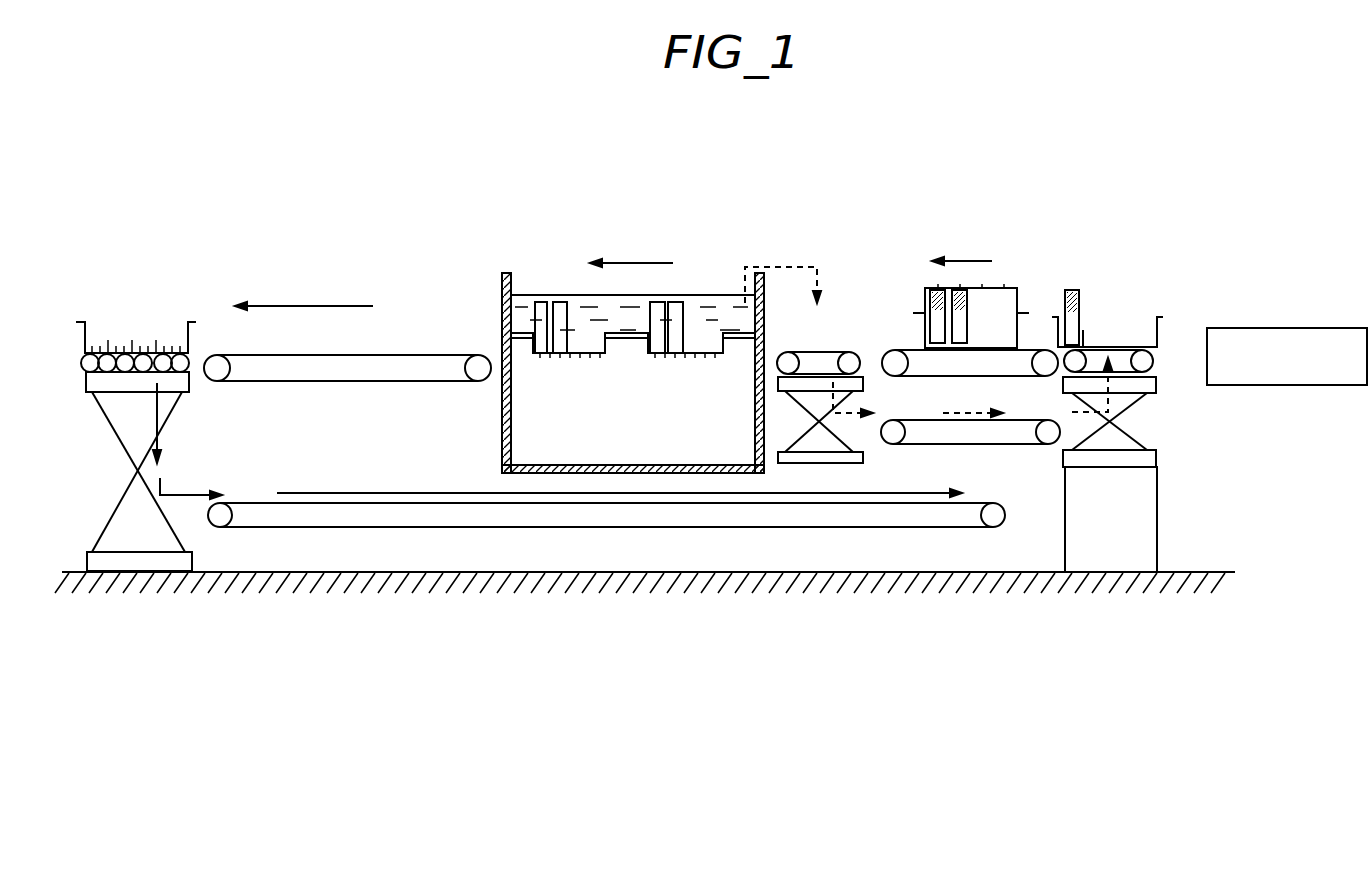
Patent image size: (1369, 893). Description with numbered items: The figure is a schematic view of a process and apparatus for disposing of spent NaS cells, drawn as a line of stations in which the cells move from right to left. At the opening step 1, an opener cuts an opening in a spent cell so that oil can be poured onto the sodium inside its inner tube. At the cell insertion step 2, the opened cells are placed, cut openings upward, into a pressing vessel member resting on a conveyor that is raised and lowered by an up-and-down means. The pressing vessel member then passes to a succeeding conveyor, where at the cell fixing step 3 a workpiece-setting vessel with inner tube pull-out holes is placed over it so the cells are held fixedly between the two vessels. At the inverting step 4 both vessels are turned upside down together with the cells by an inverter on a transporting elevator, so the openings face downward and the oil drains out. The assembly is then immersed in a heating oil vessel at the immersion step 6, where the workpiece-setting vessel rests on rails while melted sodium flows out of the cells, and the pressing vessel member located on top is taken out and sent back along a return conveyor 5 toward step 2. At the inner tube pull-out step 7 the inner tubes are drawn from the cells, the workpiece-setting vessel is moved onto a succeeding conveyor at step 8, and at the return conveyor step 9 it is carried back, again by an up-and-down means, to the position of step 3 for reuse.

The opening step 1 is at (1118, 302).
The cell insertion step 2 is at (1107, 380).
The cell fixing step 3 is at (970, 282).
The inverting step 4 is at (727, 267).
The return conveyor 5 is at (970, 412).
The heating oil vessel immersion step 6 is at (633, 331).
The inner tube pull-out step 7 is at (435, 275).
The succeeding conveyor step 8 is at (283, 380).
The return conveyor step 9 is at (606, 494).